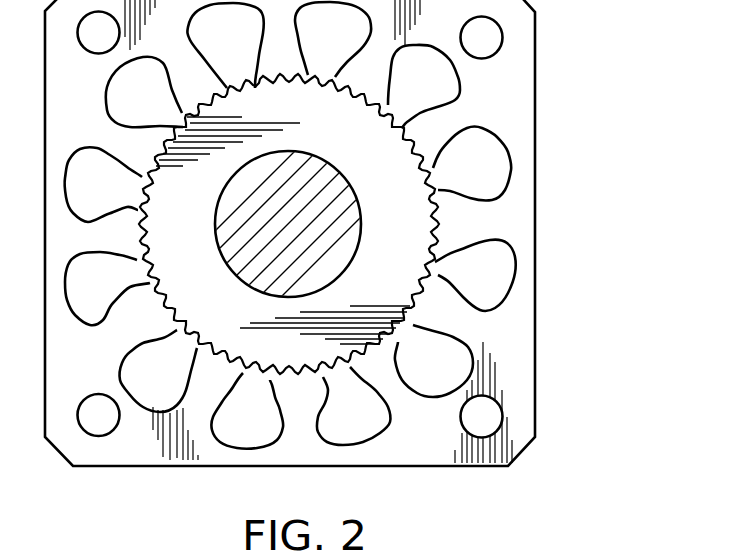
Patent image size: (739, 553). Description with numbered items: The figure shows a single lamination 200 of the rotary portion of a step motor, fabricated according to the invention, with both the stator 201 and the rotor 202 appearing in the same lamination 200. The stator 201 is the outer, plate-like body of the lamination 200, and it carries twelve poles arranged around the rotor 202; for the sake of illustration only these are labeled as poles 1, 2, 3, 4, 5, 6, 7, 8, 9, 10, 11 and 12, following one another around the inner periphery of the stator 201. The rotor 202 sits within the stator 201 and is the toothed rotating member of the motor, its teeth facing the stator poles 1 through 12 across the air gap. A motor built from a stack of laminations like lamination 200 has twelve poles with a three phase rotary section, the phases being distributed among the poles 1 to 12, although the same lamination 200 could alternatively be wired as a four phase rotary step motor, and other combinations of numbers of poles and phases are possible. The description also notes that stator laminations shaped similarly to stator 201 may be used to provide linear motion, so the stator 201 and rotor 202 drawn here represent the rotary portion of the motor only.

The pole 1 is at (225, 50).
The pole 2 is at (323, 39).
The pole 3 is at (408, 86).
The pole 4 is at (470, 158).
The pole 5 is at (475, 257).
The pole 6 is at (434, 345).
The pole 7 is at (355, 401).
The pole 8 is at (258, 411).
The pole 9 is at (171, 371).
The pole 10 is at (112, 294).
The pole 11 is at (103, 199).
The pole 12 is at (144, 111).
The lamination 200 is at (535, 403).
The stator 201 is at (343, 225).
The rotor 202 is at (403, 258).